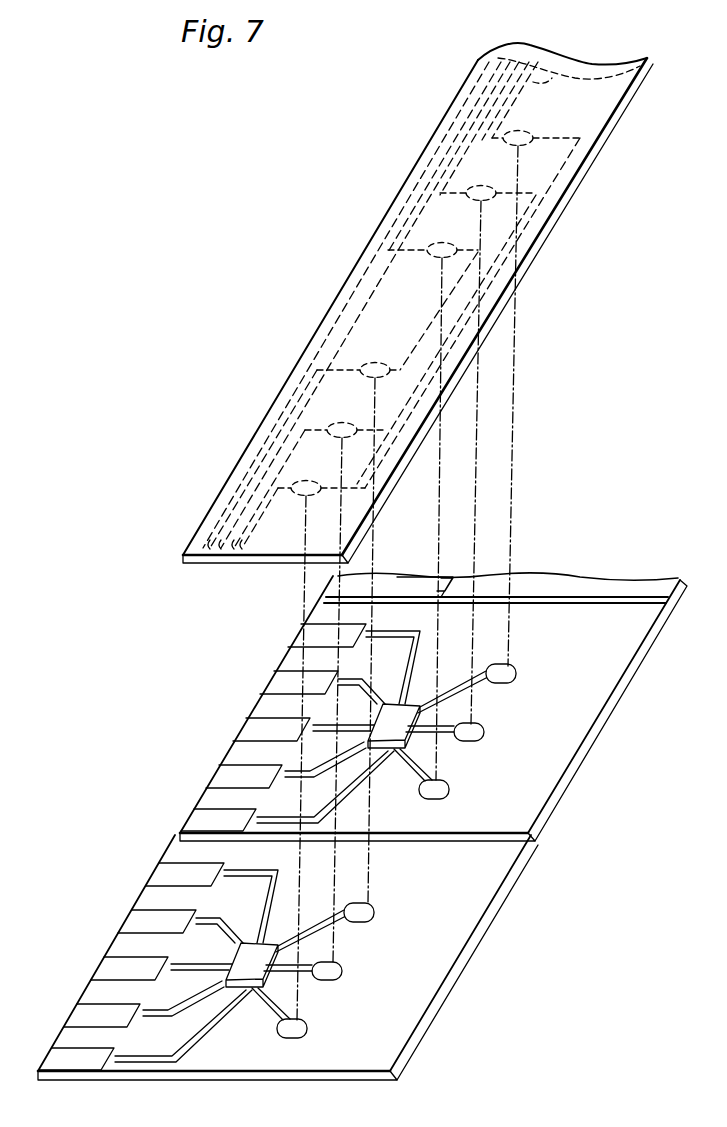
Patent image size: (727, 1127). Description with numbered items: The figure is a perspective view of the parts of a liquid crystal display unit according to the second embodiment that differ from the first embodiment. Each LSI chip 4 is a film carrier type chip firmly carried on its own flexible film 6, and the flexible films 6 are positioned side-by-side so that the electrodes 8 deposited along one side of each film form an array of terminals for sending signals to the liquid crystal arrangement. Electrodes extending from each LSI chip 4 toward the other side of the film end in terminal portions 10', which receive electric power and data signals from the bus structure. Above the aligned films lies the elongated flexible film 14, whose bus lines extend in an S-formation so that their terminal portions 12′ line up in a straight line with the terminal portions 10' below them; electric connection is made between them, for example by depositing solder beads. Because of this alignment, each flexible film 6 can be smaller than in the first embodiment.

The elongated flexible film 14 is at (603, 101).
The terminal portions 12′ is at (585, 76).
The flexible film 6 is at (636, 630).
The electrodes 8 is at (54, 1061).
The LSI chip 4 is at (249, 990).
The terminal portions 10' is at (415, 842).